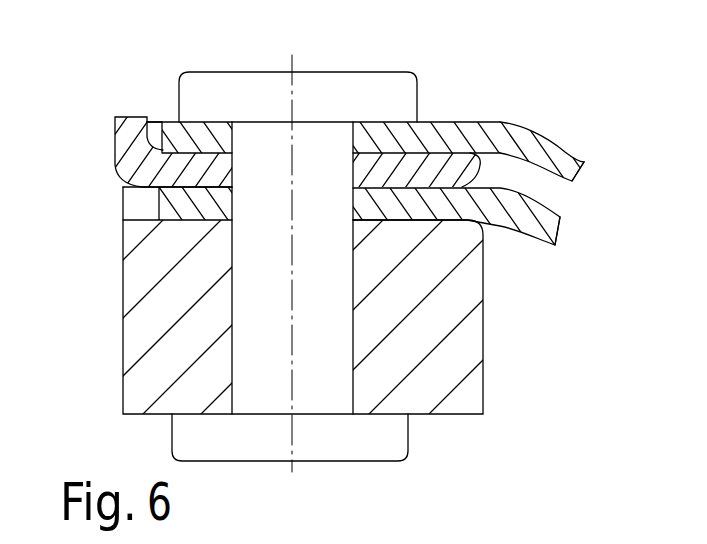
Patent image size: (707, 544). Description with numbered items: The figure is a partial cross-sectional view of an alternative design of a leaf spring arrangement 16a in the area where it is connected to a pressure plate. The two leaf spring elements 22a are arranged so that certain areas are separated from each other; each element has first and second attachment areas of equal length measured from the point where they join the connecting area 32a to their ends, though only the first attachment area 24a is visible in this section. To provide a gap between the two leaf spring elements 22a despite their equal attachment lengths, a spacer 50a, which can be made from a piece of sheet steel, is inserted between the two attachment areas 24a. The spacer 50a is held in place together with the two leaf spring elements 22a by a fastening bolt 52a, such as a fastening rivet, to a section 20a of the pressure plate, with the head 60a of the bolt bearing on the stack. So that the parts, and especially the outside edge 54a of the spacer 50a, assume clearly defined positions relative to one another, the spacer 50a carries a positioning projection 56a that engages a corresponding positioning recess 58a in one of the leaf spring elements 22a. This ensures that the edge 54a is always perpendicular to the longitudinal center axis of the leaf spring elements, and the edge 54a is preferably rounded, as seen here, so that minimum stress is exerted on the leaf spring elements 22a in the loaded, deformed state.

The leaf spring arrangement 16a is at (495, 97).
The section of a pressure plate 20a is at (470, 350).
The leaf spring element 22a is at (537, 139).
The first attachment area 24a is at (428, 135).
The connecting area 32a is at (586, 161).
The spacer 50a is at (385, 162).
The fastening bolt 52a is at (325, 382).
The outside edge of the spacer 54a is at (478, 160).
The positioning projection 56a is at (135, 140).
The positioning recess 58a is at (153, 115).
The head of the bolt 60a is at (247, 90).